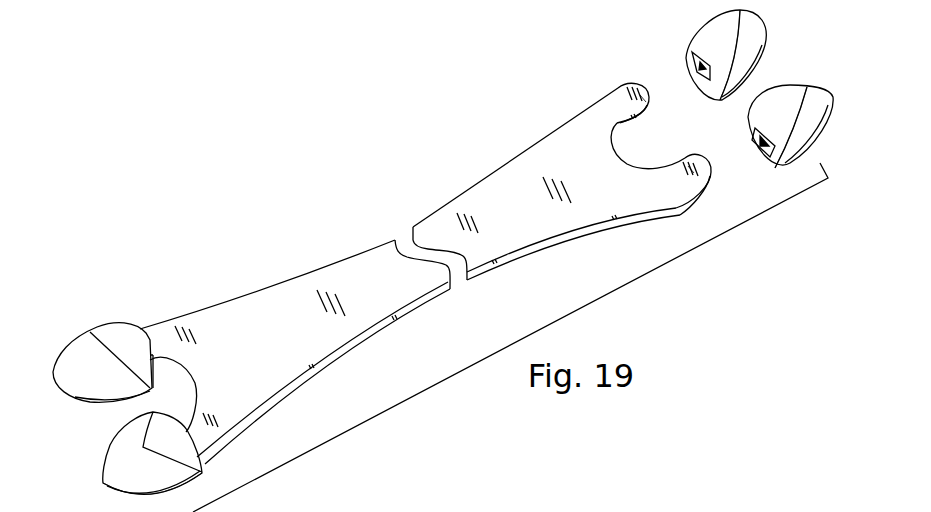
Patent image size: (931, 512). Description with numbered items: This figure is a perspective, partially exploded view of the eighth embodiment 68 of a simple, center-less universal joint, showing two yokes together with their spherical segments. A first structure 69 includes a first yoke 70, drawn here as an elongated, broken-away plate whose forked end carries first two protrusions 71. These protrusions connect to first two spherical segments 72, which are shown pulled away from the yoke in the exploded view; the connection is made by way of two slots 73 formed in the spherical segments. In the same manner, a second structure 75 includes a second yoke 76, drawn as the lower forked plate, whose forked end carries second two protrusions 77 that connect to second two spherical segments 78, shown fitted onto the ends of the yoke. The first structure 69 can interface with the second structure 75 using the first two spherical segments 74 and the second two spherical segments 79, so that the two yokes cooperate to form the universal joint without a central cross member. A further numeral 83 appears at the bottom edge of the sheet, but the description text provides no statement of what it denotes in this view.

The eighth embodiment 68 is at (232, 92).
The first structure 69 is at (437, 113).
The first yoke 70 is at (585, 183).
The first two protrusions 71 is at (688, 168).
The first two spherical segments 72 is at (706, 58).
The two slots 73 is at (757, 138).
The first two spherical segments 74 is at (752, 33).
The second structure 75 is at (227, 210).
The second yoke 76 is at (215, 371).
The second two protrusions 77 is at (197, 433).
The second two spherical segments 78 is at (75, 376).
The second two spherical segments 79 is at (128, 440).
The tool 83 is at (736, 507).